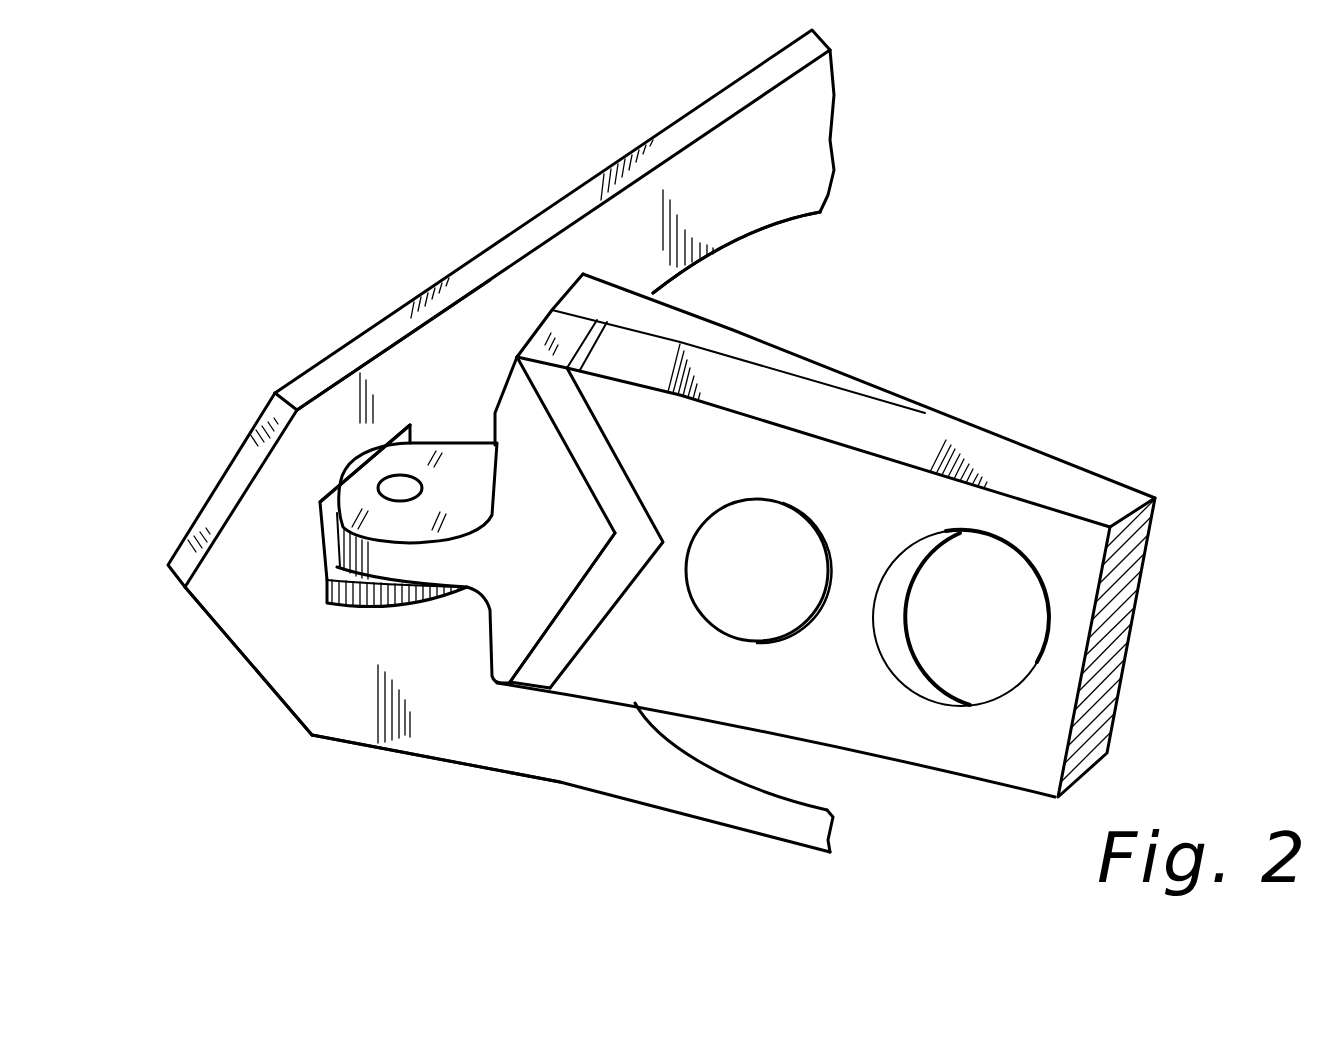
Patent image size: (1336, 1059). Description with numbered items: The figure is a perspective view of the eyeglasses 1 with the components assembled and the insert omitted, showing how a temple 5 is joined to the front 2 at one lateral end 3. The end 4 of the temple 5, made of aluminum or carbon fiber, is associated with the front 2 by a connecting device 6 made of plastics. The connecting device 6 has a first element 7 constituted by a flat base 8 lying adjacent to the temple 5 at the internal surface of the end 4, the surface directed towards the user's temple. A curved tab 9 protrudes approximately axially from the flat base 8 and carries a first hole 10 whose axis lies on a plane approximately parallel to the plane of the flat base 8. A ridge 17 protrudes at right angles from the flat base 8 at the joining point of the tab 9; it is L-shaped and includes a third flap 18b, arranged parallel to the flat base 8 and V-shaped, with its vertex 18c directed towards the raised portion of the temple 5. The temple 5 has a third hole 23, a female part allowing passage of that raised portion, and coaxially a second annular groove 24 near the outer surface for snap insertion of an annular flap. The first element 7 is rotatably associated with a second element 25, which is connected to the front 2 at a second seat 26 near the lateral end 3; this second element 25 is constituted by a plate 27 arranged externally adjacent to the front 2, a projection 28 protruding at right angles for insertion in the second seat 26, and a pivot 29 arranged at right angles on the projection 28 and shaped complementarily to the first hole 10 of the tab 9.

The eyeglasses 1 is at (1098, 243).
The front 2 is at (554, 205).
The lateral end 3 is at (217, 466).
The end of temple 4 is at (598, 664).
The temple 5 is at (1093, 473).
The connecting device 6 is at (388, 642).
The first element 7 is at (621, 282).
The flat base 8 is at (735, 332).
The curved tab 9 is at (450, 436).
The first hole 10 is at (423, 486).
The ridge 17 is at (508, 342).
The third flap 18b is at (513, 618).
The vertex 18c is at (602, 533).
The third hole 23 is at (745, 498).
The second annular groove 24 is at (840, 548).
The second element 25 is at (312, 609).
The second seat 26 is at (342, 480).
The plate 27 is at (327, 528).
The projection 28 is at (355, 598).
The pivot 29 is at (404, 497).